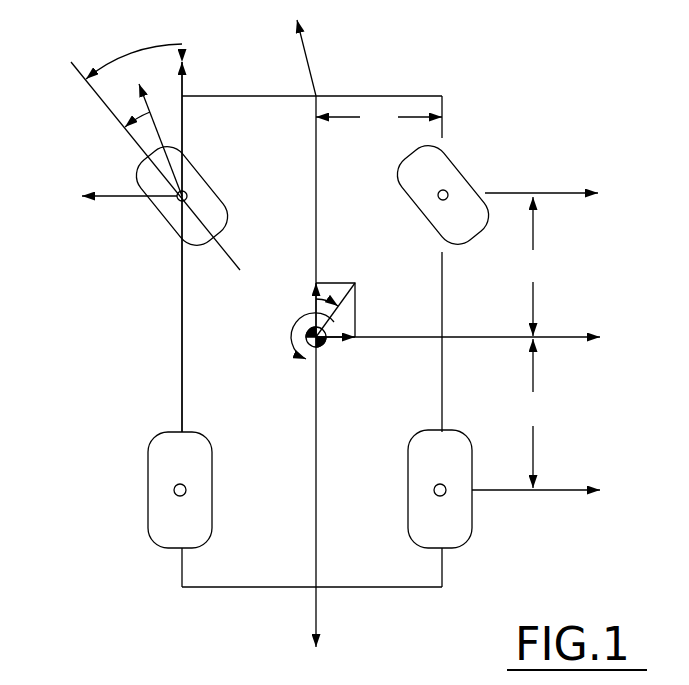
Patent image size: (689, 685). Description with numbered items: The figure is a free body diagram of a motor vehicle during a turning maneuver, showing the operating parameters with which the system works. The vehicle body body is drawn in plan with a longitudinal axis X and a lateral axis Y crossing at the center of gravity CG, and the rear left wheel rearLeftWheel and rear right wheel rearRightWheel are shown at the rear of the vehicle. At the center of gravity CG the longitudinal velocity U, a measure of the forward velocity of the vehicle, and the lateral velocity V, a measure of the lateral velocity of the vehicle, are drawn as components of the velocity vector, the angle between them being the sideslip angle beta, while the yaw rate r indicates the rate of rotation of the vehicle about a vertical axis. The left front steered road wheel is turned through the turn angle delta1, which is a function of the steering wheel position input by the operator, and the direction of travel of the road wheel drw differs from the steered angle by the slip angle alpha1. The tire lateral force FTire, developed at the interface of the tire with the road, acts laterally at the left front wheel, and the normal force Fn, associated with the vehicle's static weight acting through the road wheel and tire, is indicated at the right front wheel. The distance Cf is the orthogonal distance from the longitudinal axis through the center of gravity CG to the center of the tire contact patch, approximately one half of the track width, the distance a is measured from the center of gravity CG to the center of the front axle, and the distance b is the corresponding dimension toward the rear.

The tire lateral force FTire is at (136, 166).
The direction of travel of the road wheel drw is at (151, 127).
The slip angle alpha1 is at (131, 108).
The turn angle delta1 is at (134, 47).
The normal force Fn is at (446, 188).
The orthogonal distance to tire contact patch center Cf is at (379, 118).
The distance from center of gravity to front axle a is at (533, 266).
The distance from center of gravity to rear axle b is at (533, 413).
The longitudinal velocity U is at (303, 309).
The lateral velocity V is at (342, 351).
The vehicle sideslip angle beta is at (335, 297).
The yaw rate r is at (304, 336).
The longitudinal vehicle axis X is at (315, 388).
The lateral vehicle axis Y is at (466, 338).
The center of gravity CG is at (316, 337).
The motor vehicle body is at (312, 324).
The rear left wheel rearLeftWheel is at (180, 490).
The rear right wheel rearRightWheel is at (504, 489).